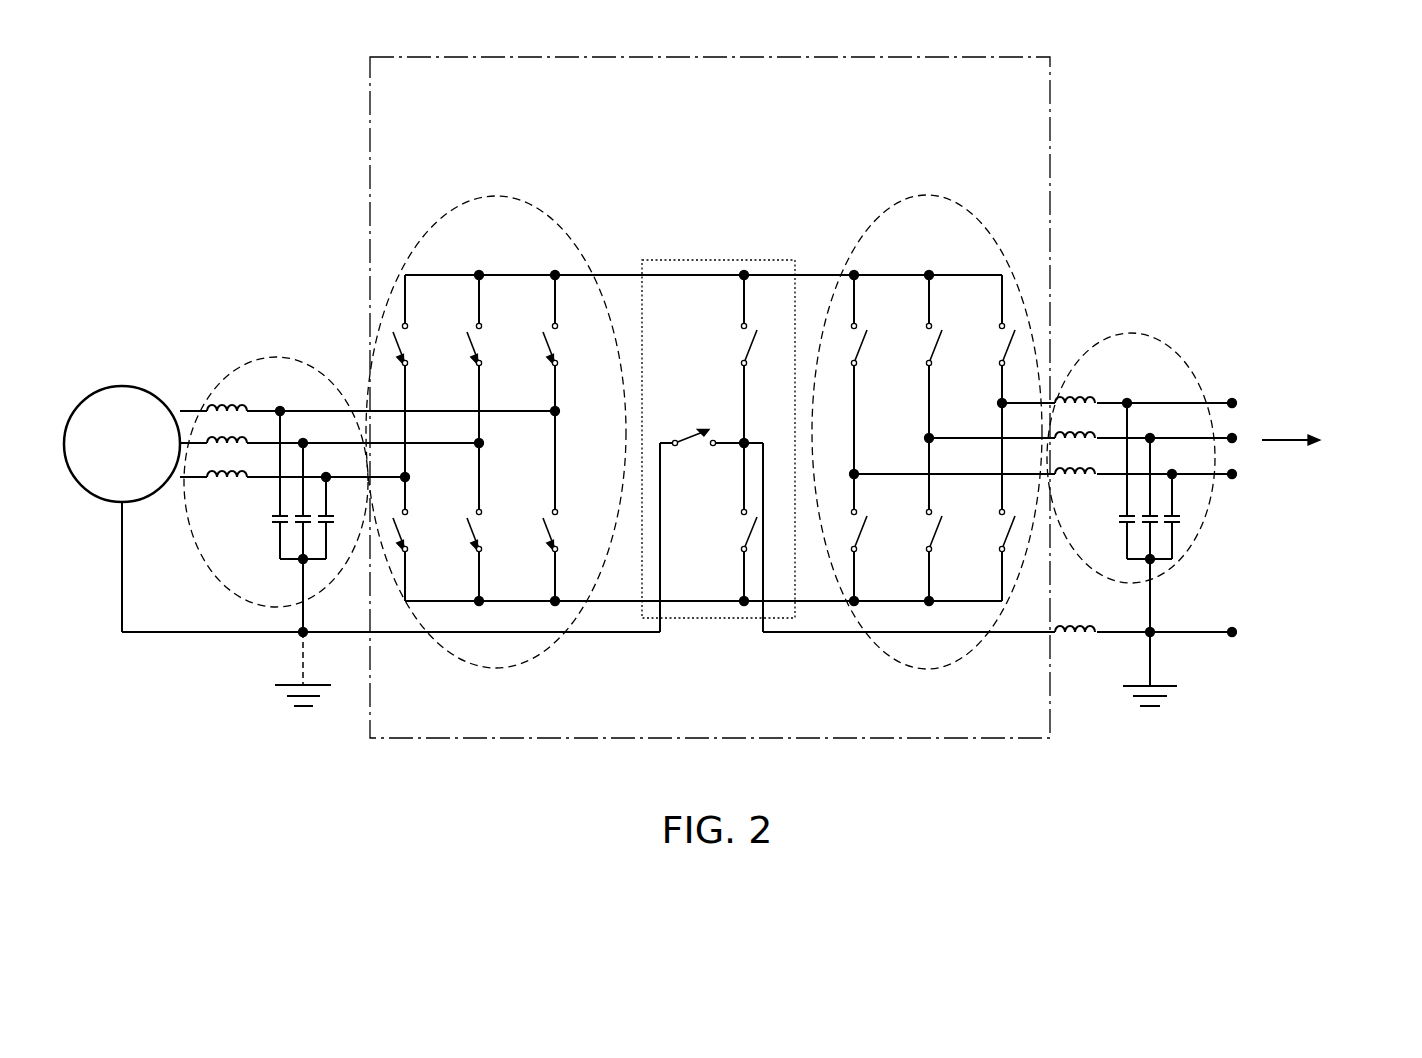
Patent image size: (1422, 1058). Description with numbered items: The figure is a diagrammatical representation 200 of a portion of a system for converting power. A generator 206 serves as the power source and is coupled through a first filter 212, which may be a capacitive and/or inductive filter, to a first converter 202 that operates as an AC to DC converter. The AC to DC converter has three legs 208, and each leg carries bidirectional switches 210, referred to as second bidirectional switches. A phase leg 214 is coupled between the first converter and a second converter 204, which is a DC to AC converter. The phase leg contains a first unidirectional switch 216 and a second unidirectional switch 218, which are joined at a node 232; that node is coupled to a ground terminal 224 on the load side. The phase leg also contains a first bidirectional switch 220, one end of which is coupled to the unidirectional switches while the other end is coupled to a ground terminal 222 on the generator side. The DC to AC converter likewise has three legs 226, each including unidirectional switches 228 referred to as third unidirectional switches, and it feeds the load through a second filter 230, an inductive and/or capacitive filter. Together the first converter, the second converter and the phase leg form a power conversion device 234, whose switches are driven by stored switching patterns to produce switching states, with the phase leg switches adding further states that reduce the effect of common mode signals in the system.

The system for converting power 200 is at (249, 779).
The first converter 202 is at (493, 196).
The second converter 204 is at (925, 195).
The generator 206 is at (122, 385).
The legs 208 is at (479, 302).
The bidirectional switches 210 is at (547, 340).
The first filter 212 is at (270, 358).
The phase leg 214 is at (685, 260).
The first unidirectional switch 216 is at (748, 347).
The second unidirectional switch 218 is at (744, 549).
The first bidirectional switch 220 is at (680, 447).
The ground terminal 222 is at (285, 690).
The ground terminal 224 is at (1168, 690).
The legs 226 is at (928, 298).
The unidirectional switches 228 is at (1012, 347).
The second filter 230 is at (1130, 333).
The node 232 is at (744, 443).
The power conversion device 234 is at (1051, 73).